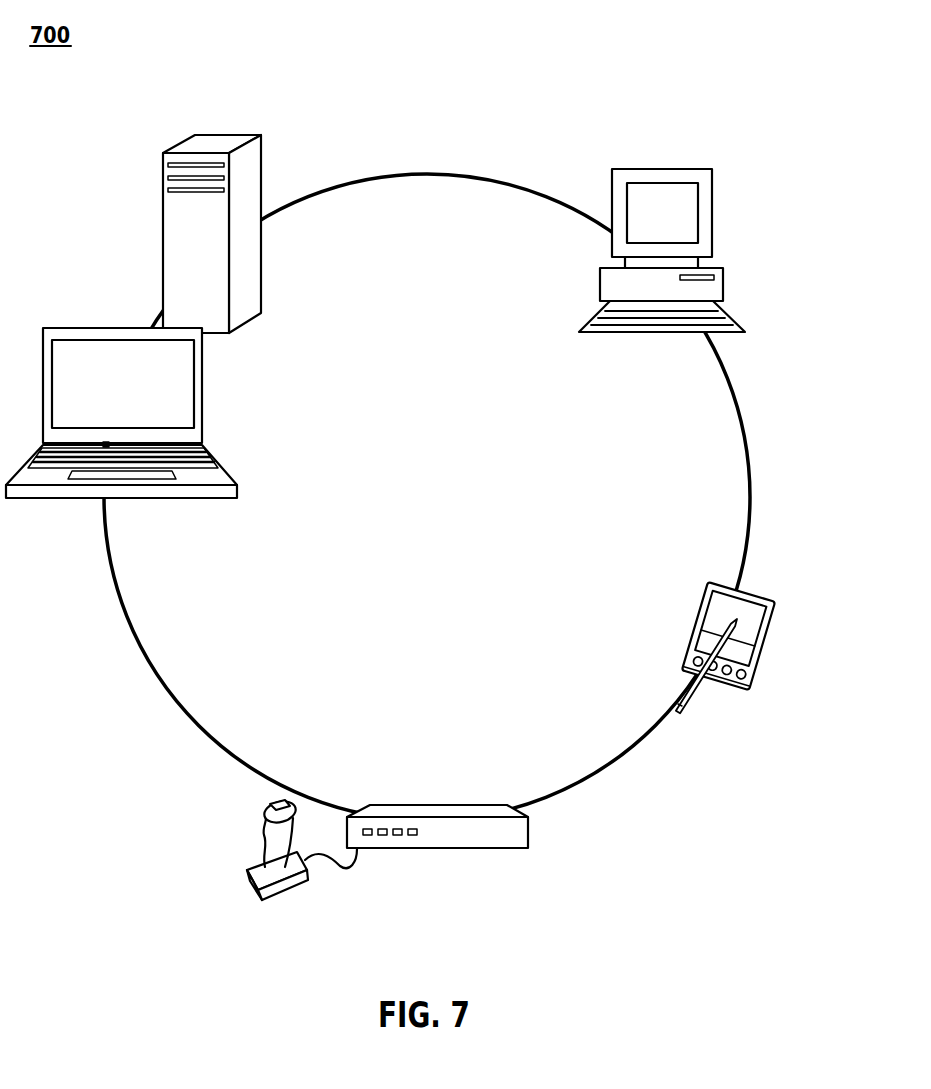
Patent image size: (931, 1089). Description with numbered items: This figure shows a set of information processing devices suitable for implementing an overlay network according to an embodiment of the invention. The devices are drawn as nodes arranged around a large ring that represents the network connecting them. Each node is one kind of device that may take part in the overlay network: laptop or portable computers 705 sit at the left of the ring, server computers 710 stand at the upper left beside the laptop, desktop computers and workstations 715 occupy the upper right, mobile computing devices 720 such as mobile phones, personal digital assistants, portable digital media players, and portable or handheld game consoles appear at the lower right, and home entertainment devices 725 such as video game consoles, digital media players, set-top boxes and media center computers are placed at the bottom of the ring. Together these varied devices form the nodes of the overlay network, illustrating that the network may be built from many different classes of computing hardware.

The laptop or portable computers 705 is at (202, 383).
The server computers 710 is at (163, 240).
The desktop computers and workstations 715 is at (660, 169).
The mobile computing devices 720 is at (765, 597).
The home entertainment devices 725 is at (437, 848).